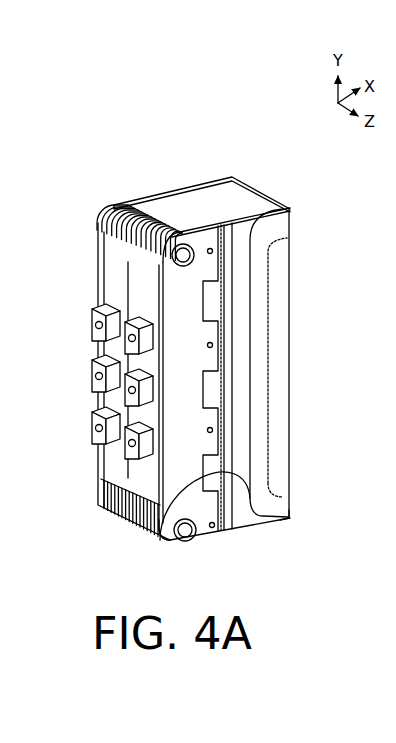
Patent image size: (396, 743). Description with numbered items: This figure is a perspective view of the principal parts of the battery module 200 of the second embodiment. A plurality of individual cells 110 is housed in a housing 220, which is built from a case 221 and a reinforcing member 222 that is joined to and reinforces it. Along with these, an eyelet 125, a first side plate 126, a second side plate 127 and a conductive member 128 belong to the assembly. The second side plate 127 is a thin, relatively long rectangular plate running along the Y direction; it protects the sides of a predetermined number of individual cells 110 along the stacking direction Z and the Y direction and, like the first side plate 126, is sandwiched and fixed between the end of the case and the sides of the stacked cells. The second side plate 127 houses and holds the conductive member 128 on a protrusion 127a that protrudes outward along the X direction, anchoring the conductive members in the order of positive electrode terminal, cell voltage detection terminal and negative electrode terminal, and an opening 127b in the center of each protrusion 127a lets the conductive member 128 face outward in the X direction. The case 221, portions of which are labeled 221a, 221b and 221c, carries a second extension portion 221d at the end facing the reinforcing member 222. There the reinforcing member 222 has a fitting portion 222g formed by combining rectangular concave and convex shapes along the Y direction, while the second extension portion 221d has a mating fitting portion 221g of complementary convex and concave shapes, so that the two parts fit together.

The battery module 200 is at (86, 131).
The individual cell 110 is at (108, 206).
The eyelet 125 is at (172, 257).
The first side plate 126 is at (237, 206).
The second side plate 127 is at (140, 479).
The protrusion 127a is at (95, 357).
The opening 127b is at (94, 374).
The conductive member 128 is at (92, 320).
The housing 220 is at (234, 160).
The case 221 is at (212, 188).
The first plate section 221a is at (265, 340).
The second plate section 221b is at (247, 355).
The third plate section 221c is at (230, 373).
The second extension portion 221d is at (210, 388).
The fitting portion 221g is at (162, 532).
The reinforcing member 222 is at (200, 497).
The fitting portion 222g is at (290, 518).